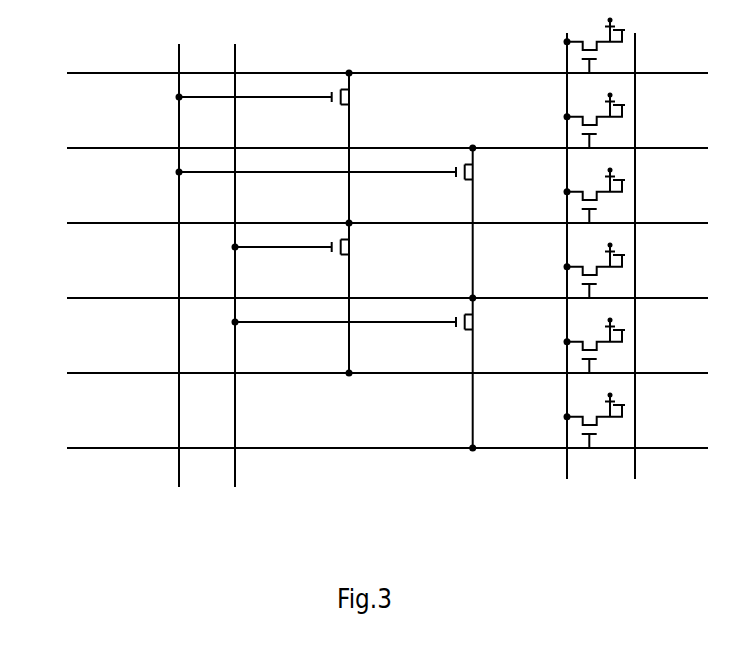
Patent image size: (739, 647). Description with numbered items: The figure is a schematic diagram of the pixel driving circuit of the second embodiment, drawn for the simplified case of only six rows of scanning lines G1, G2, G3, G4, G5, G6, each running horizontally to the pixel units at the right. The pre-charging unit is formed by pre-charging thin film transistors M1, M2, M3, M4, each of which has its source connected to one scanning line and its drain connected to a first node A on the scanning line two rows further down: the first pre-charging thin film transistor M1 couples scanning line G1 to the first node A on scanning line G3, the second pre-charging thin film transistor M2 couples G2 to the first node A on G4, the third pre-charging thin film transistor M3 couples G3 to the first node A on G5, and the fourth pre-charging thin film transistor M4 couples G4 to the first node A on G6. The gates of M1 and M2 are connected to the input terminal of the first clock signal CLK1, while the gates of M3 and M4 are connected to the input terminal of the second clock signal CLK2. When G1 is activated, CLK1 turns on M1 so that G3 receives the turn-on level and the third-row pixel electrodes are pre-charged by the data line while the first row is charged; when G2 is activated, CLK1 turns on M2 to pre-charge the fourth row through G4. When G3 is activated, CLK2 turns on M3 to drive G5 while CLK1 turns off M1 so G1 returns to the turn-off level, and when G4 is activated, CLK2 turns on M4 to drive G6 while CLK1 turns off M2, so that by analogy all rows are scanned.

The first row of scanning line G1 is at (369, 72).
The second row of scanning line G2 is at (369, 147).
The third row of scanning line G3 is at (369, 222).
The fourth row of scanning line G4 is at (369, 297).
The fifth row of scanning line G5 is at (369, 372).
The sixth row of scanning line G6 is at (369, 447).
The first clock signal CLK1 is at (166, 250).
The second clock signal CLK2 is at (246, 250).
The first pre-charging thin film transistor M1 is at (284, 147).
The second pre-charging thin film transistor M2 is at (347, 222).
The third pre-charging thin film transistor M3 is at (312, 297).
The fourth pre-charging thin film transistor M4 is at (375, 372).
The first node A is at (425, 321).